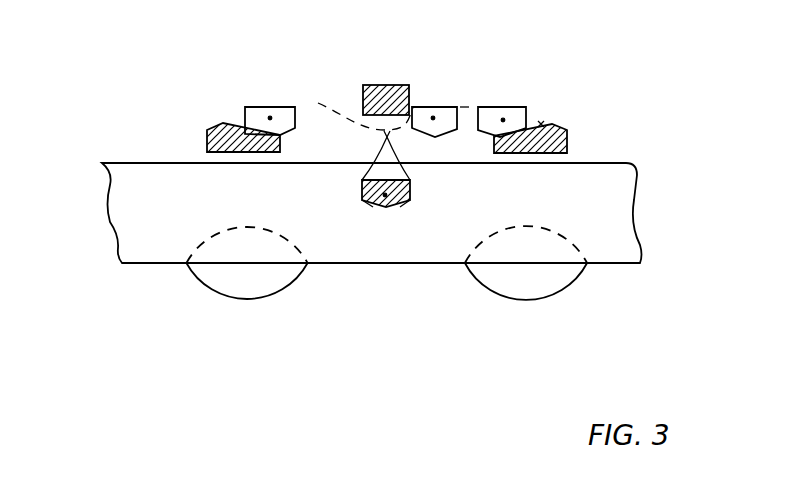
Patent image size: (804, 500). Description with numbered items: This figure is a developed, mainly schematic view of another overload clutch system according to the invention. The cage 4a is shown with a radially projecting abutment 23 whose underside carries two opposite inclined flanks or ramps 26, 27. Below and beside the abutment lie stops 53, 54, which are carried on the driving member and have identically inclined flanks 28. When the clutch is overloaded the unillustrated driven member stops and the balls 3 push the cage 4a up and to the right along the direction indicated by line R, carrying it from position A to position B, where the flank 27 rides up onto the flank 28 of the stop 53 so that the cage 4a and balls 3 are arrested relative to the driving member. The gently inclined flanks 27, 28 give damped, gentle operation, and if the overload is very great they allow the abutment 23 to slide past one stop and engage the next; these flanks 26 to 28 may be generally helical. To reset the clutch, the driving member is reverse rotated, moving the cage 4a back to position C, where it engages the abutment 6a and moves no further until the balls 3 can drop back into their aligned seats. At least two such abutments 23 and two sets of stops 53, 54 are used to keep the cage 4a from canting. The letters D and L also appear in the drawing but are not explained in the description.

The balls 3 is at (210, 288).
The cage 4a is at (140, 193).
The abutment 6a is at (373, 92).
The radially projecting abutment 23 is at (362, 192).
The flank 26 is at (371, 207).
The flank 27 is at (406, 209).
The inclined flank 28 is at (595, 107).
The stop 53 is at (565, 138).
The stop 54 is at (245, 142).
The position A is at (385, 195).
The position B is at (503, 120).
The position C is at (433, 118).
The block D is at (270, 118).
The line L is at (318, 103).
The line R is at (420, 117).